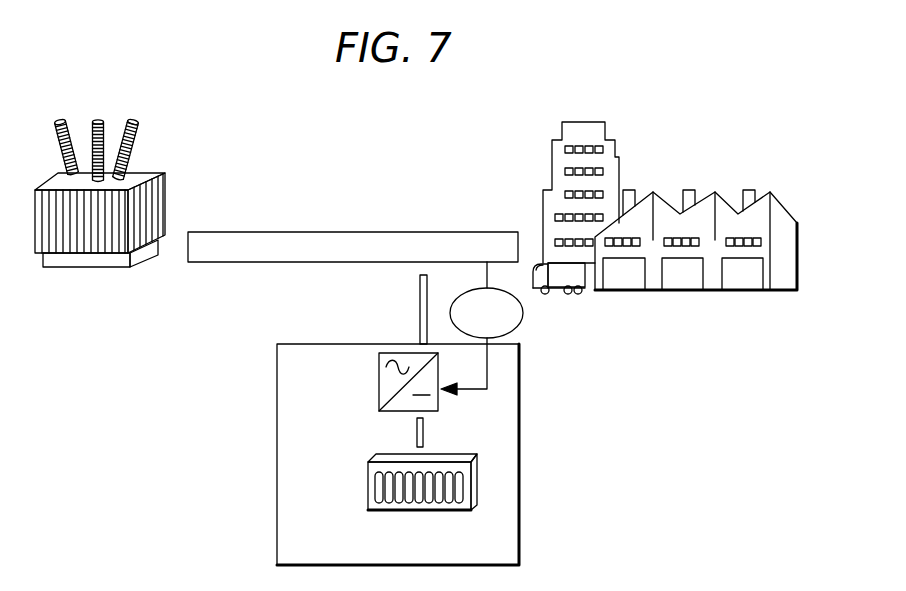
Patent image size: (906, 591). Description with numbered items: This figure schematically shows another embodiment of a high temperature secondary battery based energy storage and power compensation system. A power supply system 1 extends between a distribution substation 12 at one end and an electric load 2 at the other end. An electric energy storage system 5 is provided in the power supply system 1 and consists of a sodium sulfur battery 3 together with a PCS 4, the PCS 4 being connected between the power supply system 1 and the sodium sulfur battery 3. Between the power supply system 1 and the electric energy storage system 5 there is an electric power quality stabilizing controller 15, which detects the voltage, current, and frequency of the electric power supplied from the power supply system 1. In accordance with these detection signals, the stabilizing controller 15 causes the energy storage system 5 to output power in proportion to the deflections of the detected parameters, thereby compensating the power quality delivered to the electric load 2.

The power supply system 1 is at (308, 232).
The electric load 2 is at (668, 178).
The sodium sulfur battery 3 is at (368, 493).
The PCS 4 is at (379, 378).
The electric energy storage system 5 is at (521, 518).
The distribution substation 12 is at (143, 137).
The electric power quality stabilizing controller 15 is at (523, 316).